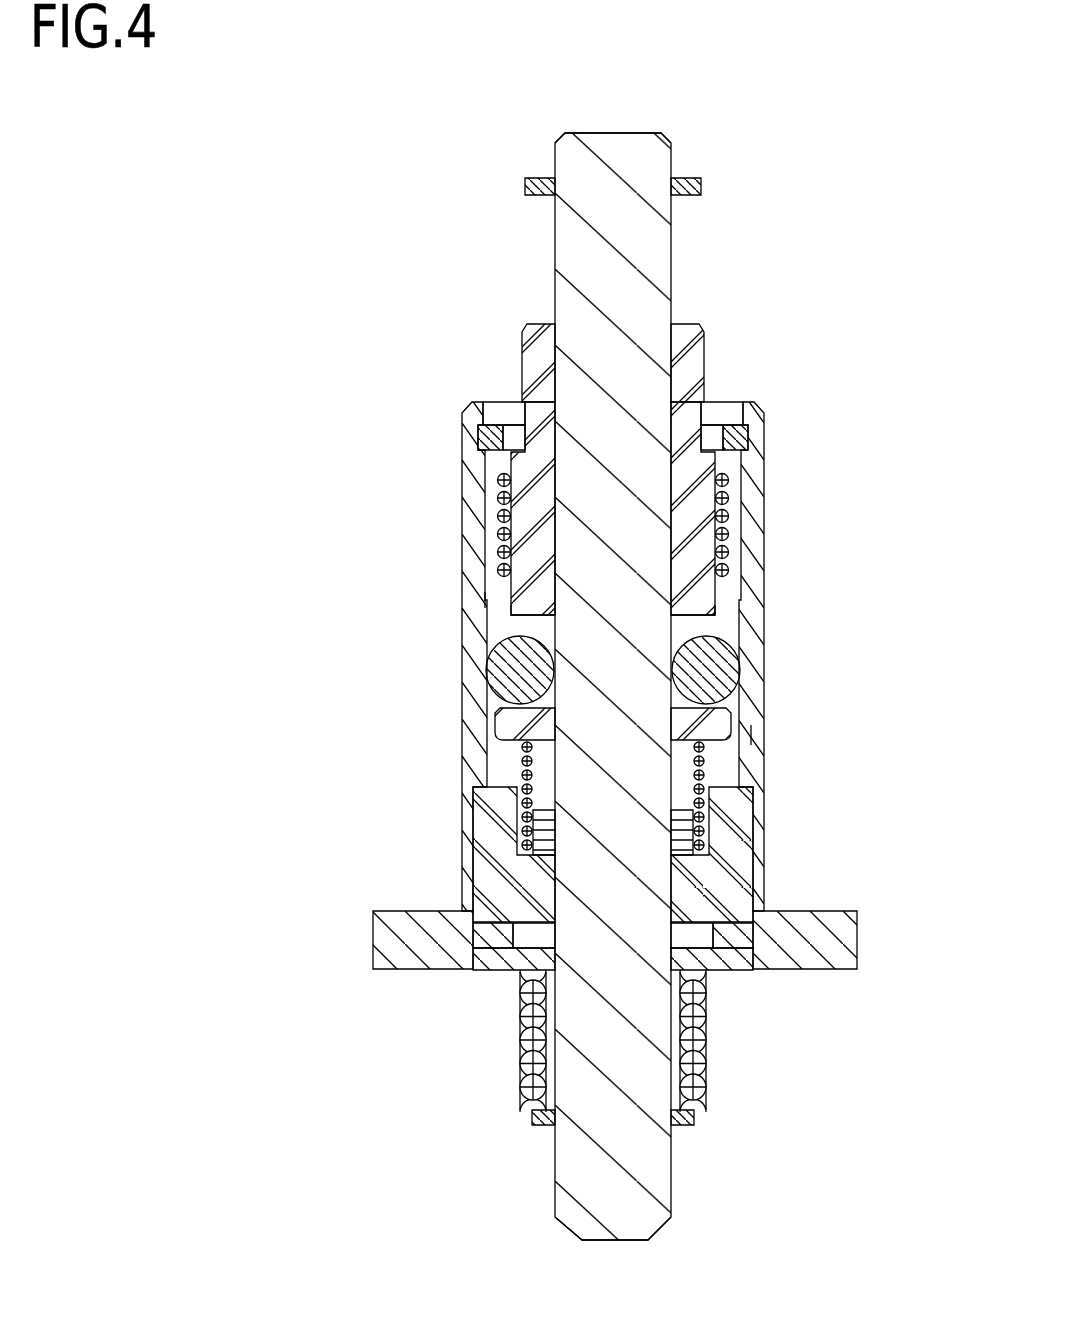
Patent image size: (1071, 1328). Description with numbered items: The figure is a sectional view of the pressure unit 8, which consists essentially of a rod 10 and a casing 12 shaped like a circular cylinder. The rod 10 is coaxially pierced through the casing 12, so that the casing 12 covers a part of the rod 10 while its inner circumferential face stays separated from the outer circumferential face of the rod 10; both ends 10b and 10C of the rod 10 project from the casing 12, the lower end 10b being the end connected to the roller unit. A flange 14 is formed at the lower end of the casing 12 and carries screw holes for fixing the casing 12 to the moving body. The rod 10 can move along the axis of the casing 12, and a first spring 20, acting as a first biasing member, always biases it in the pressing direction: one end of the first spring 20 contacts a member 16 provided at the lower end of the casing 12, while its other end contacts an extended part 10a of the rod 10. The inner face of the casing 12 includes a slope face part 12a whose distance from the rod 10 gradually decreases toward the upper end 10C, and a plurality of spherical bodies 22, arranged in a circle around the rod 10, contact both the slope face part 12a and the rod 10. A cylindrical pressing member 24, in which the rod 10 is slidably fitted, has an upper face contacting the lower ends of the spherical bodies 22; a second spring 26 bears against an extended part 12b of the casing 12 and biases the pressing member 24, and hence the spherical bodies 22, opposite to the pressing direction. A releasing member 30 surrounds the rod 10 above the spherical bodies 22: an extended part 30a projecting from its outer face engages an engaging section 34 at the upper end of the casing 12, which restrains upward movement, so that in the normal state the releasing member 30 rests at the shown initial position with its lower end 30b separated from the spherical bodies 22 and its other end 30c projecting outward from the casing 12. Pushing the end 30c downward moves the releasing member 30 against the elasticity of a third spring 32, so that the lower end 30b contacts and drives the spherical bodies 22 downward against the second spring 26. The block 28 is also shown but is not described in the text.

The pressure unit 8 is at (363, 89).
The rod 10 is at (606, 655).
The extended part of the rod 10a is at (536, 1120).
The one end of the rod 10b is at (556, 1217).
The other end of the rod 10C is at (622, 130).
The casing 12 is at (620, 656).
The slope face part 12a is at (735, 738).
The extended part of the casing 12b is at (490, 580).
The flange 14 is at (832, 933).
The member 16 is at (745, 975).
The first spring 20 is at (713, 1003).
The spherical bodies 22 is at (740, 658).
The pressing member 24 is at (500, 732).
The second spring 26 is at (704, 770).
The holder block 28 is at (725, 872).
The releasing member 30 is at (621, 456).
The extended part of the releasing member 30a is at (492, 466).
The lower end of the releasing member 30b is at (712, 611).
The other end of the releasing member 30c is at (690, 345).
The third spring 32 is at (735, 497).
The engaging section 34 is at (486, 436).